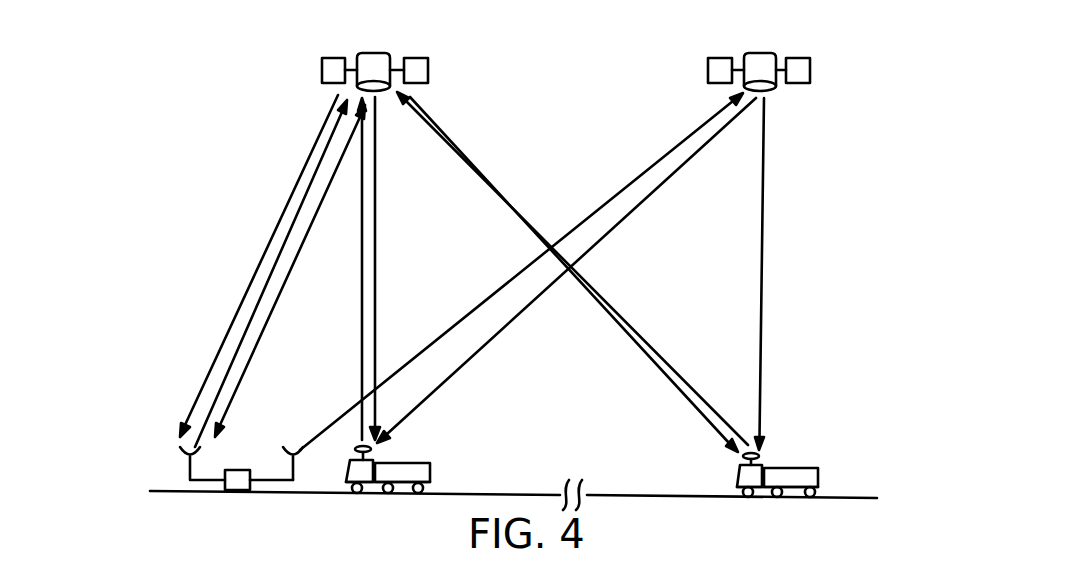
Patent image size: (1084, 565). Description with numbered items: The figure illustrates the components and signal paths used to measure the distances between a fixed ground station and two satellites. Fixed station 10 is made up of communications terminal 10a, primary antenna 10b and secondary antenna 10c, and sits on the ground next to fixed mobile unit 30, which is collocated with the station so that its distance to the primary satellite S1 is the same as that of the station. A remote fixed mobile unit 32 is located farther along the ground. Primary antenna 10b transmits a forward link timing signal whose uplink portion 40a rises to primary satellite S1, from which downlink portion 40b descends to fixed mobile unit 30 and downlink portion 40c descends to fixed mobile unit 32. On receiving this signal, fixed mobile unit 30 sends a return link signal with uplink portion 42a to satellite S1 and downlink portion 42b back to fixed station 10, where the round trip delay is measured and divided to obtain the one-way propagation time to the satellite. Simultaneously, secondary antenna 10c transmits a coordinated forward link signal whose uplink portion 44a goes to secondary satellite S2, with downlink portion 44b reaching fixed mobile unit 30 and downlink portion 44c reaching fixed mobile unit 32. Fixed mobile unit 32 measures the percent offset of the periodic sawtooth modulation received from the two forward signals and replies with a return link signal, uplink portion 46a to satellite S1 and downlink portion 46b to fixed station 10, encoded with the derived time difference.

The primary satellite S1 is at (370, 54).
The secondary satellite S2 is at (760, 54).
The fixed station 10 is at (219, 441).
The communications terminal 10a is at (234, 468).
The primary antenna 10b is at (176, 452).
The secondary antenna 10c is at (283, 455).
The fixed mobile unit 30 is at (420, 457).
The fixed mobile unit 32 is at (794, 466).
The uplink portion 40a is at (224, 378).
The downlink portion 40b is at (376, 205).
The downlink portion 40c is at (467, 163).
The uplink portion 42a is at (361, 272).
The downlink portion 42b is at (267, 322).
The uplink portion 44a is at (438, 338).
The downlink portion 44b is at (470, 357).
The downlink portion 44c is at (764, 193).
The uplink portion 46a is at (502, 197).
The downlink portion 46b is at (266, 249).